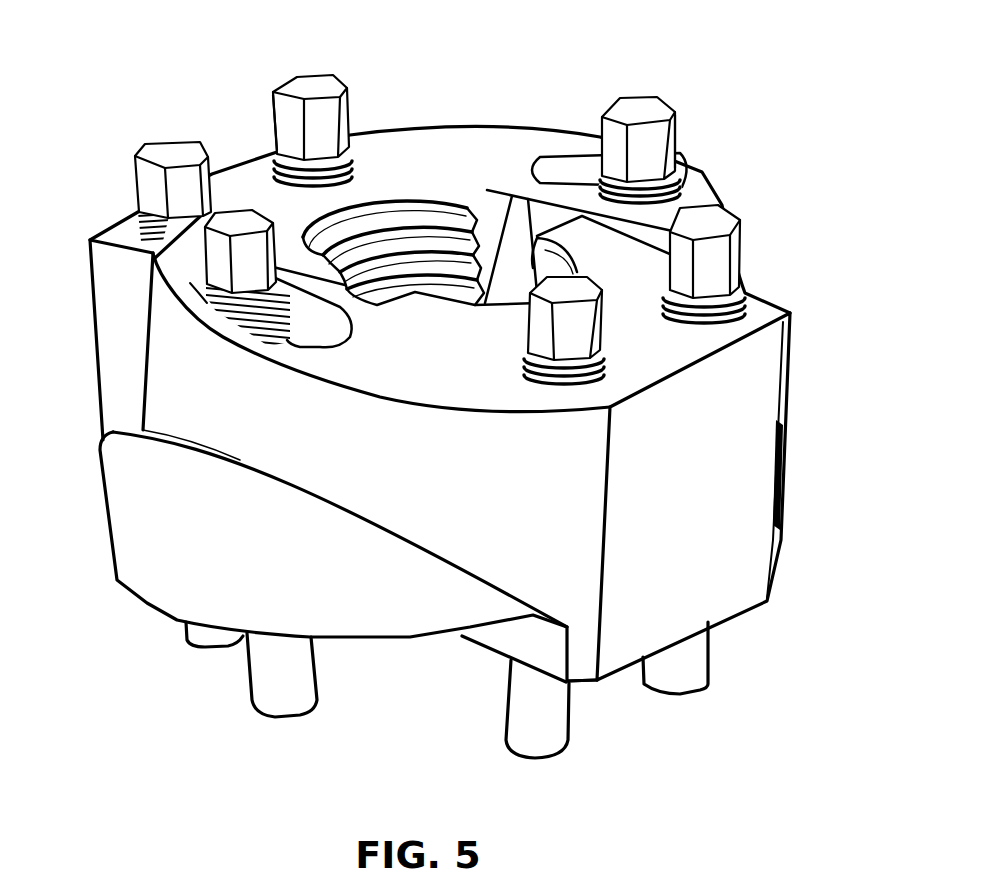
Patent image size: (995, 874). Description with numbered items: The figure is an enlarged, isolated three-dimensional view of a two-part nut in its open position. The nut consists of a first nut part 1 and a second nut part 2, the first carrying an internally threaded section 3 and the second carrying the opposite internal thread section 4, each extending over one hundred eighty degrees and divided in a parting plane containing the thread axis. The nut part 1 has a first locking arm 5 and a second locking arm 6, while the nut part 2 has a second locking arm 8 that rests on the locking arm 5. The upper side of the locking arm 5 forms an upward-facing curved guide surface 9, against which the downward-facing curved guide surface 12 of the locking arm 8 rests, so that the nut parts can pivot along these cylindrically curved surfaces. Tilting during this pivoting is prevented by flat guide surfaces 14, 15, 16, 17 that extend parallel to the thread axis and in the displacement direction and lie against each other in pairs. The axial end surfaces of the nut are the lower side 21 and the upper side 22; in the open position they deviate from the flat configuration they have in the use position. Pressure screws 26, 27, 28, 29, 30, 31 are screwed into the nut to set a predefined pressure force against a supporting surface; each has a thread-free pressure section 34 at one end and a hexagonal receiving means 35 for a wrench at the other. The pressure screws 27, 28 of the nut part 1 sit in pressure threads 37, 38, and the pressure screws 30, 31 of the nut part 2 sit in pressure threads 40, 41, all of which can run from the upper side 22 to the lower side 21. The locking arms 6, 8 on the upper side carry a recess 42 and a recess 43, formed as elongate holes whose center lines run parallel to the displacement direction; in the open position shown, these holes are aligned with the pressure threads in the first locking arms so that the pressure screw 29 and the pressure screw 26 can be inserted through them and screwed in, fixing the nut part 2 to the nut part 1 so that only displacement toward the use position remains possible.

The nut part 1 is at (459, 188).
The nut part 2 is at (729, 405).
The internally threaded section 3 is at (408, 203).
The internal thread section 4 is at (532, 248).
The locking arm 5 is at (399, 597).
The locking arm 6 is at (713, 183).
The locking arm 8 is at (172, 372).
The curved guide surface 9 is at (146, 420).
The curved guide surface 12 is at (353, 515).
The flat guide surface 14 is at (517, 222).
The flat guide surface 15 is at (798, 358).
The flat guide surface 16 is at (532, 638).
The flat guide surface 17 is at (125, 284).
The lower side 21 is at (428, 692).
The upper side 22 is at (398, 165).
The pressure screw 26 is at (243, 222).
The pressure screw 27 is at (168, 150).
The pressure screw 28 is at (313, 90).
The pressure screw 29 is at (637, 106).
The pressure screw 30 is at (741, 253).
The pressure screw 31 is at (685, 306).
The pressure section 34 is at (223, 636).
The receiving means 35 is at (283, 117).
The pressure thread 37 is at (130, 226).
The pressure thread 38 is at (362, 158).
The pressure thread 40 is at (748, 295).
The pressure thread 41 is at (614, 356).
The recess 42 is at (567, 162).
The recess 43 is at (317, 325).